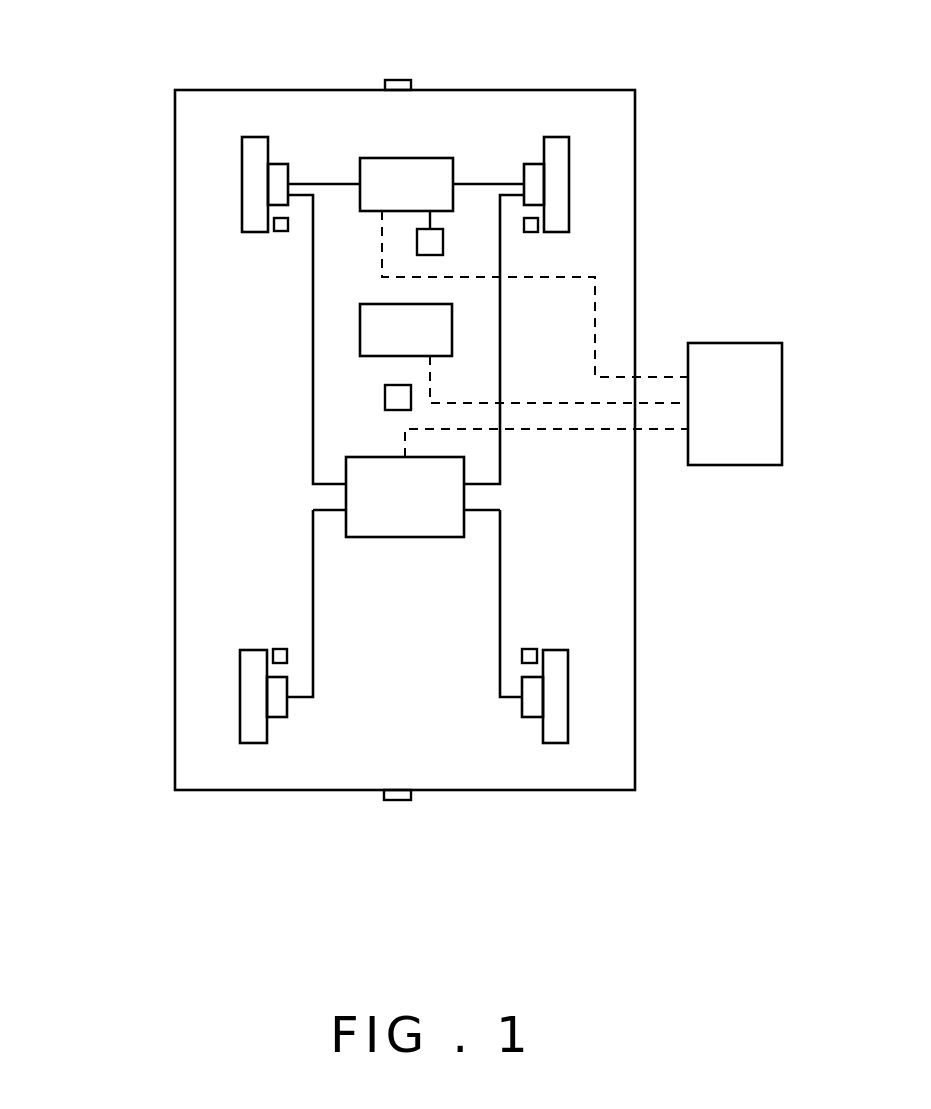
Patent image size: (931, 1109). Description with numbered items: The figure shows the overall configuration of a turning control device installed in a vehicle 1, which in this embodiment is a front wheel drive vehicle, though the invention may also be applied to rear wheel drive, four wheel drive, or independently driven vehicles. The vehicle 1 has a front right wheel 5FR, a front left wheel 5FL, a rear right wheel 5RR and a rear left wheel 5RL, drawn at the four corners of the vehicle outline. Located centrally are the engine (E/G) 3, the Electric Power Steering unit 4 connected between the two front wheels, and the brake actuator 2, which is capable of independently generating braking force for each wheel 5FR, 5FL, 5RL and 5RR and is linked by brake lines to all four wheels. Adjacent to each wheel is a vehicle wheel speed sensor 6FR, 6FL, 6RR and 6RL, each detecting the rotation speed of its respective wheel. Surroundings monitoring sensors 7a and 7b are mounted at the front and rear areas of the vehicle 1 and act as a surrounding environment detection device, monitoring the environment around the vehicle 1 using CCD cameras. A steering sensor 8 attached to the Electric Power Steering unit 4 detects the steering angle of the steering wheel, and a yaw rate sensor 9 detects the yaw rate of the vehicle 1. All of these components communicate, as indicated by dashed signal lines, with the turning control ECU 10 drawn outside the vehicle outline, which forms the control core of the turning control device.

The vehicle 1 is at (593, 90).
The brake actuator 2 is at (397, 537).
The engine 3 is at (452, 312).
The Electric Power Steering unit 4 is at (437, 158).
The front left wheel 5FL is at (241, 150).
The front right wheel 5FR is at (569, 152).
The rear left wheel 5RL is at (240, 720).
The rear right wheel 5RR is at (568, 718).
The vehicle wheel speed sensor 6FL is at (279, 232).
The vehicle wheel speed sensor 6FR is at (530, 232).
The vehicle wheel speed sensor 6RL is at (278, 649).
The vehicle wheel speed sensor 6RR is at (530, 649).
The surroundings monitoring sensor 7a is at (405, 80).
The surroundings monitoring sensor 7b is at (393, 800).
The steering sensor 8 is at (443, 241).
The yaw rate sensor 9 is at (385, 392).
The turning control ECU 10 is at (765, 343).